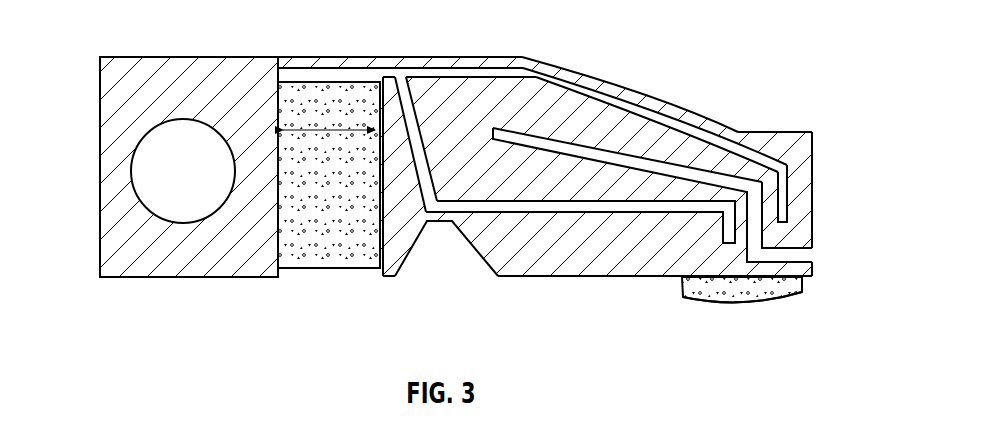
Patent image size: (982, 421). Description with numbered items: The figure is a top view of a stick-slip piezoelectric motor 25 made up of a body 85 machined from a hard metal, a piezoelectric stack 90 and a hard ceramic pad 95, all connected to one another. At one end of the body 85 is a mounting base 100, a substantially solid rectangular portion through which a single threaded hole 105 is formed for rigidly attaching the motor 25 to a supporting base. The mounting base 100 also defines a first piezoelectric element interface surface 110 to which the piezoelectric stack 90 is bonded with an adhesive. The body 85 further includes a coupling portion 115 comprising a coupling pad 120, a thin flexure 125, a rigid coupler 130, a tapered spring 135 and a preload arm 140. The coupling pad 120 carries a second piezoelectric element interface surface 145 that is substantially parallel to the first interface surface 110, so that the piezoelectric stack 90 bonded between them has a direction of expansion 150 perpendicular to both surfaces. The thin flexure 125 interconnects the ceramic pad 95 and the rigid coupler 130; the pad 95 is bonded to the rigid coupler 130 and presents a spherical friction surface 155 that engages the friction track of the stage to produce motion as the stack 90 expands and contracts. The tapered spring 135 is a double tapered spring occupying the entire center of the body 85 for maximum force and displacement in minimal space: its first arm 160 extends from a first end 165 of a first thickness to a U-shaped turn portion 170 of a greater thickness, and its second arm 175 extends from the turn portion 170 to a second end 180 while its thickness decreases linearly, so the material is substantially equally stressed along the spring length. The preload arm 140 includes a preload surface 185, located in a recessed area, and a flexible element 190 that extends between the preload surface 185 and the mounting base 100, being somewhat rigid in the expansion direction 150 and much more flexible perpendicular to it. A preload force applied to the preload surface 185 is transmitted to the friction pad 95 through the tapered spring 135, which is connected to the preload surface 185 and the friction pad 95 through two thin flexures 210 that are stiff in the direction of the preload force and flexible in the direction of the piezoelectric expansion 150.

The motor 25 is at (802, 50).
The body 85 is at (225, 262).
The piezoelectric stack 90 is at (300, 93).
The ceramic pad 95 is at (745, 290).
The mounting base 100 is at (110, 132).
The threaded hole 105 is at (163, 135).
The first piezoelectric element interface surface 110 is at (290, 268).
The coupling portion 115 is at (618, 290).
The coupling pad 120 is at (397, 245).
The thin flexure 125 is at (426, 222).
The rigid coupler 130 is at (580, 245).
The tapered spring 135 is at (503, 105).
The preload arm 140 is at (815, 122).
The second piezoelectric element interface surface 145 is at (372, 93).
The direction of expansion 150 is at (303, 128).
The spherical friction surface 155 is at (785, 298).
The first arm 160 is at (633, 193).
The first end 165 is at (717, 198).
The turn portion 170 is at (472, 85).
The second arm 175 is at (600, 122).
The second end 180 is at (733, 170).
The preload surface 185 is at (760, 130).
The flexible element 190 is at (576, 78).
The thin flexures 210 is at (790, 178).